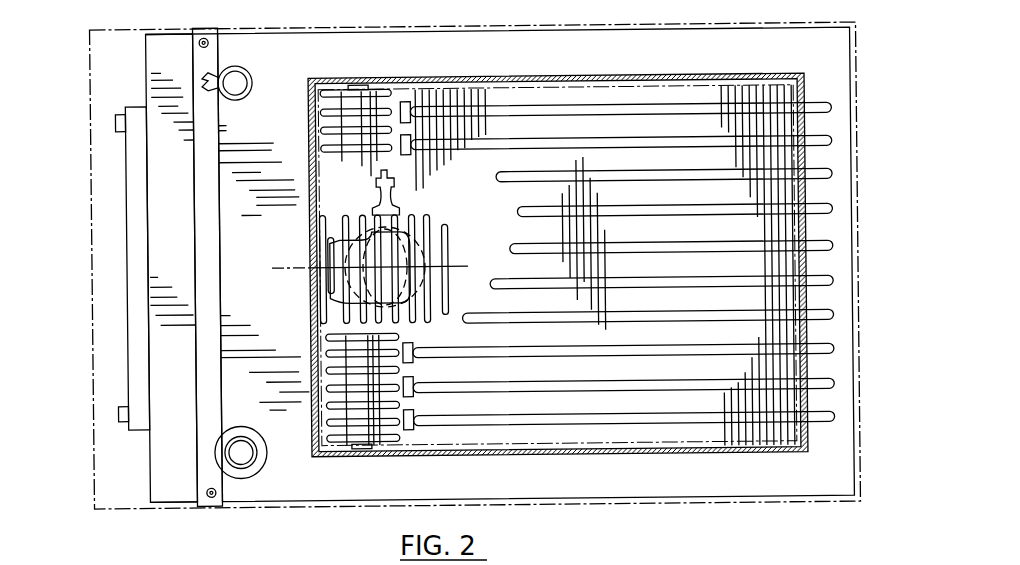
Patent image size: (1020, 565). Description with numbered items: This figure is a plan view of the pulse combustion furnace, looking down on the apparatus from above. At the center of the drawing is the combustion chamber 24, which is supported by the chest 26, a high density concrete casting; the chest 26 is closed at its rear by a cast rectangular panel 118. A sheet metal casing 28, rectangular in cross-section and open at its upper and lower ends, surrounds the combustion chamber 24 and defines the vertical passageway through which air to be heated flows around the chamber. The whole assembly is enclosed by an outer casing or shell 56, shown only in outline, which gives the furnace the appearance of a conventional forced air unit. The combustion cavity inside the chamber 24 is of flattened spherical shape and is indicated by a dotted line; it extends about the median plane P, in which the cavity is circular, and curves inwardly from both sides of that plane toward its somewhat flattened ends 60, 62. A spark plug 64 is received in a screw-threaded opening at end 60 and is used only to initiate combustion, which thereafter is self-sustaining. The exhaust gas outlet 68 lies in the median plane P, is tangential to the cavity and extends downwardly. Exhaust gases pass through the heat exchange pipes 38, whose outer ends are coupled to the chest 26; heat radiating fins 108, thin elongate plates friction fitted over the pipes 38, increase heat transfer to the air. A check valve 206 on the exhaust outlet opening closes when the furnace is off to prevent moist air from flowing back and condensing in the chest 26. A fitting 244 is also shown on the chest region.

The combustion chamber 24 is at (374, 259).
The chest 26 is at (291, 427).
The sheet metal casing 28 is at (476, 458).
The heat exchange pipes 38 is at (667, 150).
The outer casing or shell 56 is at (621, 498).
The flattened end of cavity 60 is at (430, 221).
The flattened end of cavity 62 is at (433, 290).
The spark plug 64 is at (378, 194).
The exhaust gas outlet 68 is at (447, 247).
The heat radiating fins 108 is at (786, 435).
The cast rectangular panel 118 is at (148, 202).
The check valve 206 is at (264, 465).
The upper grommet 244 is at (250, 70).
The median plane P is at (292, 264).